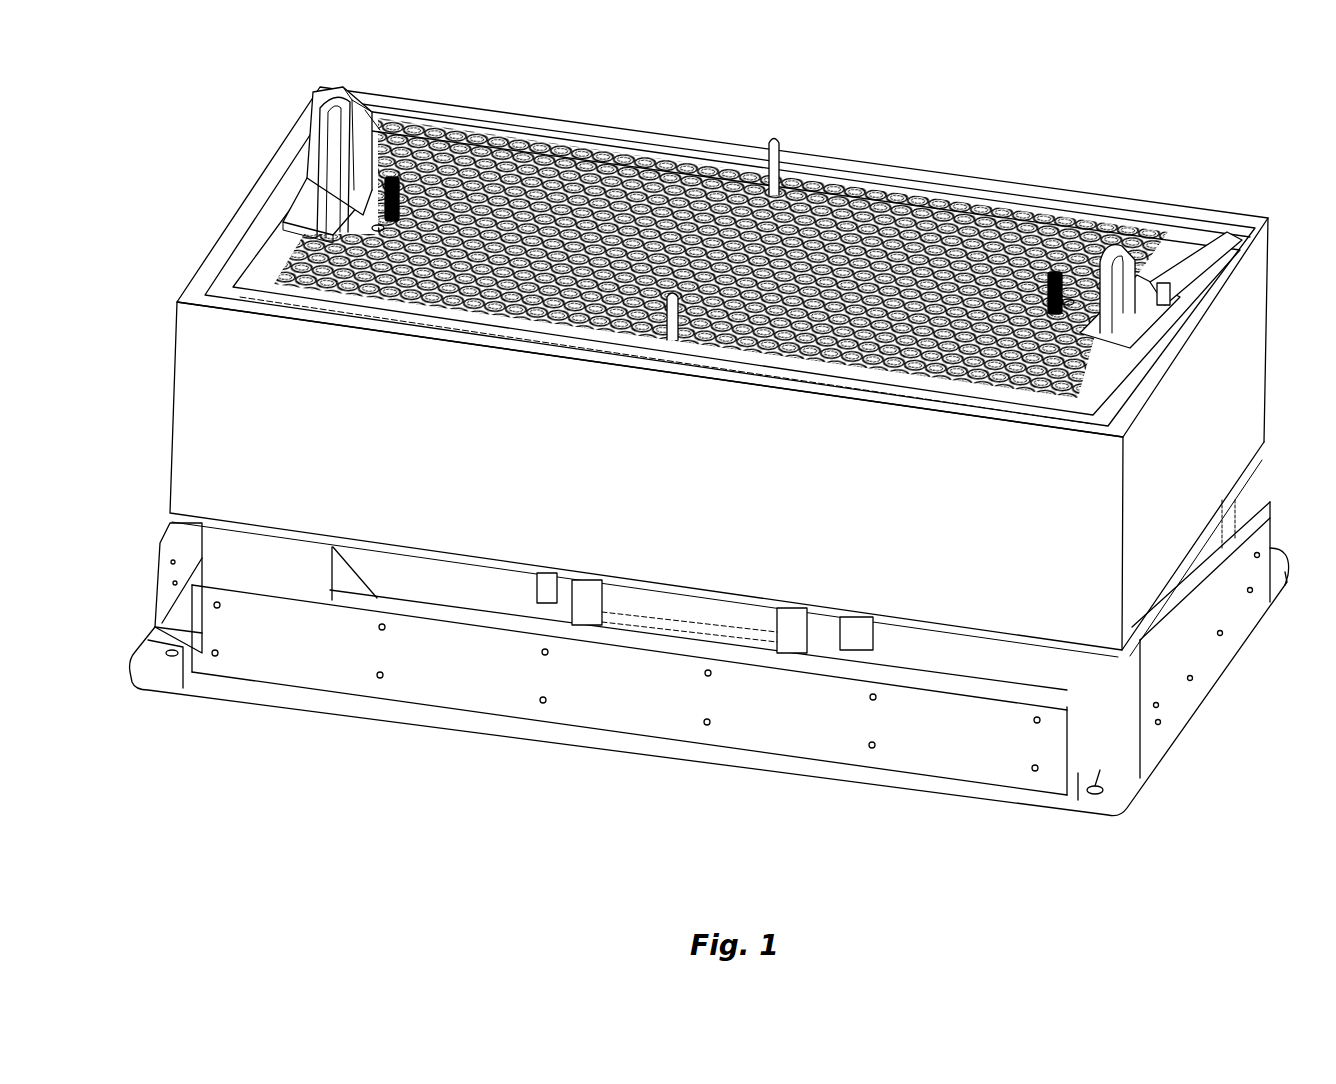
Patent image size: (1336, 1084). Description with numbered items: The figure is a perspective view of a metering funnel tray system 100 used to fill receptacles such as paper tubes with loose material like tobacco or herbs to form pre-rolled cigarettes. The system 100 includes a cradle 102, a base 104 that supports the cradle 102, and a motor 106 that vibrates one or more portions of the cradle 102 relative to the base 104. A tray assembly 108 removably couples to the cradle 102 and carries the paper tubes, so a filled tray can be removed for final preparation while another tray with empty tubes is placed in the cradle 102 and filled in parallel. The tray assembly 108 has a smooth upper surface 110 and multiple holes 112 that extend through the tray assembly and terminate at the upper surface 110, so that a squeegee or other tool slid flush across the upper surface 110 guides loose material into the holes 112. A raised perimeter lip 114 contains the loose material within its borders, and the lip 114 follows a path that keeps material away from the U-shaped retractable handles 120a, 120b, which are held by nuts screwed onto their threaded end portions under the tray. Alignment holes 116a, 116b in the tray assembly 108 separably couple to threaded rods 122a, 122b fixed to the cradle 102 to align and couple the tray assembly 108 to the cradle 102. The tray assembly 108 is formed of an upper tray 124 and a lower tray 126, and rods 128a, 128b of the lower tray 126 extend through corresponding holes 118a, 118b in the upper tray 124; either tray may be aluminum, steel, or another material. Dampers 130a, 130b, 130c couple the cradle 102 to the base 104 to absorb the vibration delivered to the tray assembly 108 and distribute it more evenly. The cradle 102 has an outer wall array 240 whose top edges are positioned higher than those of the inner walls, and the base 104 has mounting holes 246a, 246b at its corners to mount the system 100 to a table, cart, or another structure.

The metering funnel tray system 100 is at (1062, 85).
The cradle 102 is at (198, 250).
The base 104 is at (1228, 681).
The motor 106 is at (524, 592).
The tray assembly 108 is at (305, 158).
The upper surface 110 is at (270, 272).
The holes 112 is at (797, 194).
The raised perimeter lip 114 is at (620, 148).
The hole 116a is at (372, 226).
The hole 116b is at (1072, 300).
The hole 118a is at (760, 186).
The hole 118b is at (660, 338).
The retractable handle 120a is at (330, 140).
The retractable handle 120b is at (1115, 250).
The threaded rod 122a is at (390, 182).
The threaded rod 122b is at (1056, 314).
The upper tray 124 is at (374, 126).
The lower tray 126 is at (306, 203).
The rod 128a is at (772, 140).
The rod 128b is at (676, 333).
The damper 130a is at (287, 570).
The damper 130b is at (1017, 677).
The damper 130c is at (1193, 569).
The outer wall array 240 is at (196, 405).
The mounting hole 246a is at (180, 653).
The mounting hole 246b is at (1093, 777).